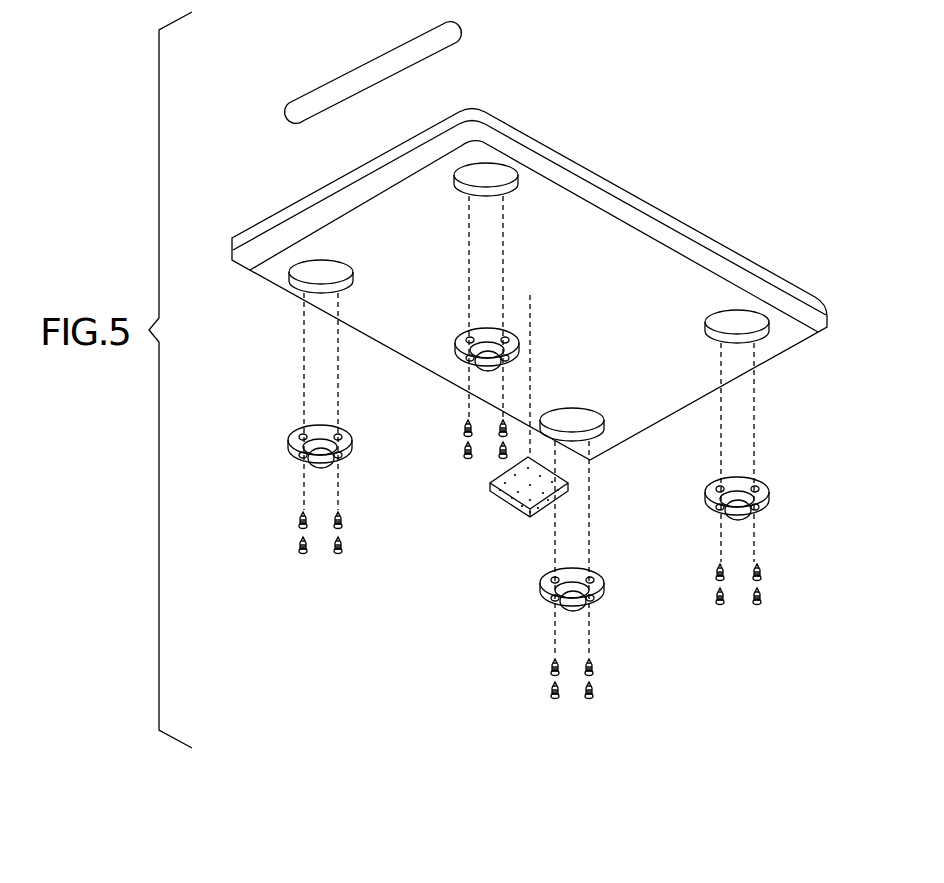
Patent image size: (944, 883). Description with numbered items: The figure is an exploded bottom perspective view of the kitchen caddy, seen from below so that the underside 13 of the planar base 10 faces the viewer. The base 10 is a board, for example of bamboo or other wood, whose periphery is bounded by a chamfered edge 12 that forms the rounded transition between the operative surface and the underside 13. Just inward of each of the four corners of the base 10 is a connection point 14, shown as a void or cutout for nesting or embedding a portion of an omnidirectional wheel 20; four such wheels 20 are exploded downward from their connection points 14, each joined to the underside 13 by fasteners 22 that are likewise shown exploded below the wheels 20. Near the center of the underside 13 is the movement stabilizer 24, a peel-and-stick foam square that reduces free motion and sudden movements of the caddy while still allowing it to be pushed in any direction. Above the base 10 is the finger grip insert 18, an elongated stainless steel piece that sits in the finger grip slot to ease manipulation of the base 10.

The planar base 10 is at (568, 160).
The chamfered edge 12 is at (720, 270).
The underside 13 is at (607, 294).
The connection point 14 is at (462, 188).
The finger grip insert 18 is at (318, 100).
The omnidirectional wheel 20 is at (455, 350).
The fasteners 22 is at (460, 445).
The movement stabilizer 24 is at (516, 502).